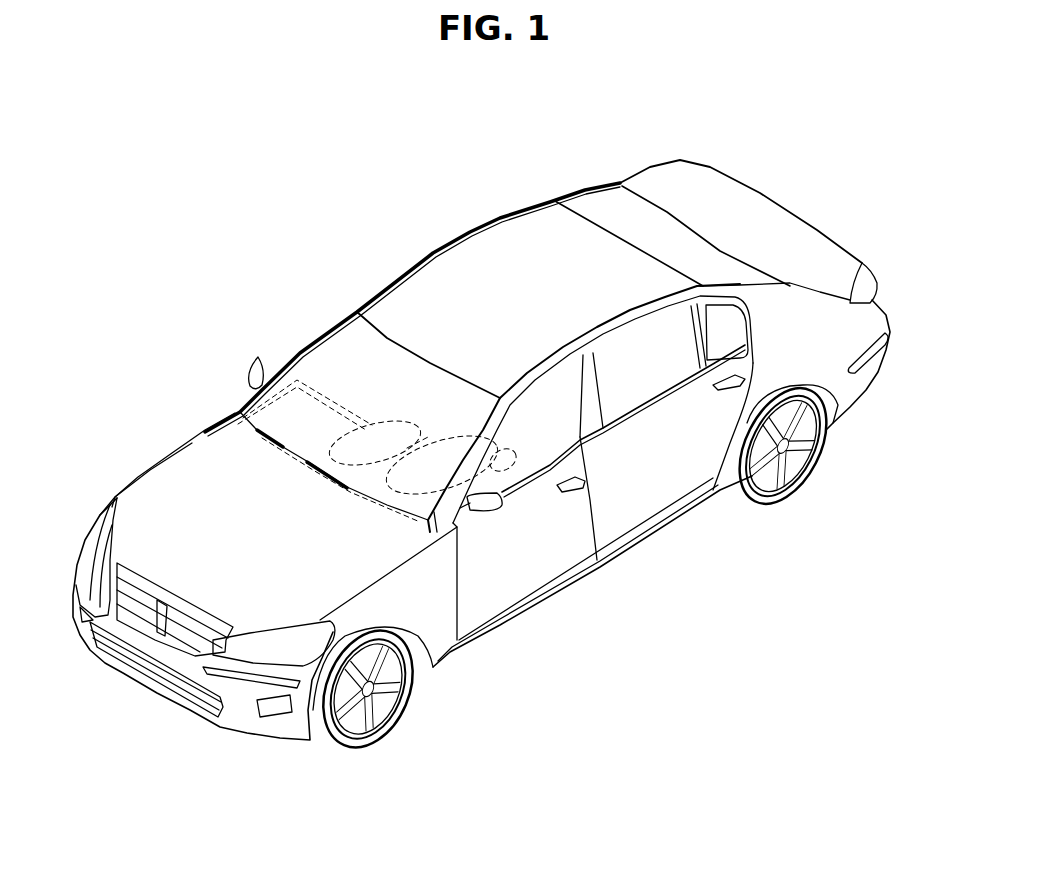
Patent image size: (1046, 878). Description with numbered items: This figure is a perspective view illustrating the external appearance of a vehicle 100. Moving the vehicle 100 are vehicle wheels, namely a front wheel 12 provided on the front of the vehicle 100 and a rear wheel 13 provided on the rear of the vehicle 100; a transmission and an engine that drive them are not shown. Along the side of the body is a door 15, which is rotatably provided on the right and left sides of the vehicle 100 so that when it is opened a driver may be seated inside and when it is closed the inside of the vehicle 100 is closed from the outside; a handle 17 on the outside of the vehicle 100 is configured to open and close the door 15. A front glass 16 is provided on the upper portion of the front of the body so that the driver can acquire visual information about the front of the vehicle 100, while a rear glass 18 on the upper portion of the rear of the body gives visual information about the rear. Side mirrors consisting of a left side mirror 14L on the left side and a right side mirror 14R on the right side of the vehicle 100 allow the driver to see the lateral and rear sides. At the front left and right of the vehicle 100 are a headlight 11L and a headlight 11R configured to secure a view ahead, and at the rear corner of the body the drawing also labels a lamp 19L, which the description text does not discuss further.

The vehicle 100 is at (270, 165).
The headlight 11R is at (100, 527).
The headlight 11L is at (290, 647).
The front wheel 12 is at (397, 690).
The rear wheel 13 is at (805, 458).
The right side mirror 14R is at (247, 367).
The left side mirror 14L is at (503, 513).
The door 15 is at (557, 540).
The front glass 16 is at (427, 375).
The handle 17 is at (590, 482).
The rear glass 18 is at (688, 235).
The left tail lamp 19L is at (872, 290).